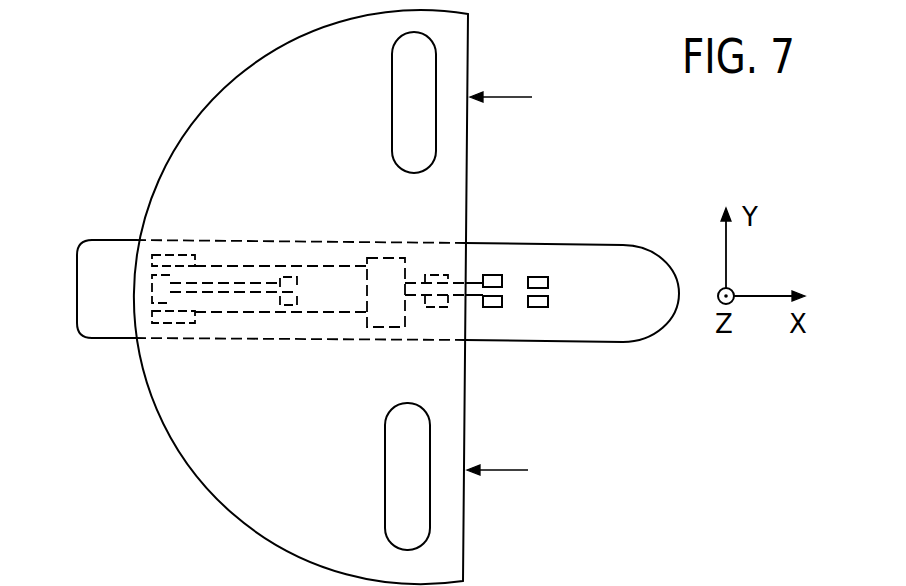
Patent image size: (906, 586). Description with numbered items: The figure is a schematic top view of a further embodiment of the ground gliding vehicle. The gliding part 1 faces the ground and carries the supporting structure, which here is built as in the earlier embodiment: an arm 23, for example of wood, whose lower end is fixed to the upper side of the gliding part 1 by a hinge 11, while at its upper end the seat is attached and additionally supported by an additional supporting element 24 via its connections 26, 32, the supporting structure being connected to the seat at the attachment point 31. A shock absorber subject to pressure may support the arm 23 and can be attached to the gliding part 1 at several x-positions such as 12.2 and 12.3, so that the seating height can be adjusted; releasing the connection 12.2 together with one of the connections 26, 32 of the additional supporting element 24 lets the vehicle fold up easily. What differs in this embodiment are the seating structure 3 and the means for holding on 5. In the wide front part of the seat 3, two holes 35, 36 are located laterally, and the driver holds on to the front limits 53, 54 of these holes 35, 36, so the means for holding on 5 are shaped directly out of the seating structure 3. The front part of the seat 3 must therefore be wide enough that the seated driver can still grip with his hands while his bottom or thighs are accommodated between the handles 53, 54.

The gliding part 1 is at (95, 320).
The seating structure 3 is at (227, 108).
The means for holding on 5 is at (512, 286).
The hinge 11 is at (174, 262).
The connection 12.2 is at (492, 275).
The attachment position 12.3 is at (540, 277).
The arm 23 is at (328, 298).
The additional supporting element 24 is at (243, 285).
The connection 26 is at (290, 277).
The attachment point 31 is at (385, 270).
The connection 32 is at (160, 295).
The hole 35 is at (410, 512).
The hole 36 is at (418, 62).
The front limit 53 is at (442, 435).
The front limit 54 is at (445, 132).